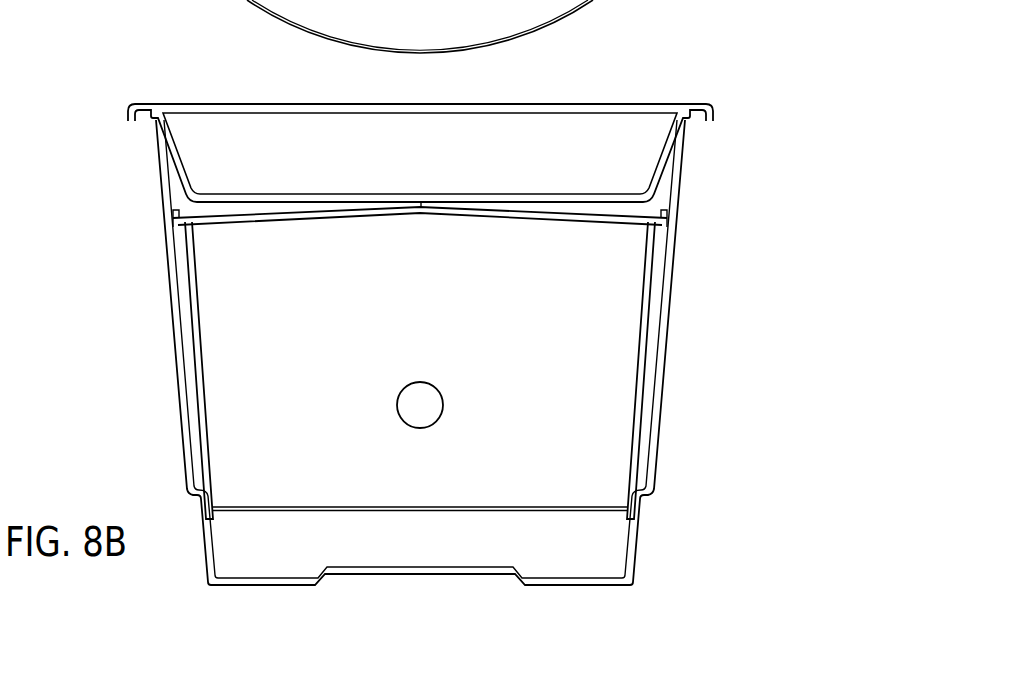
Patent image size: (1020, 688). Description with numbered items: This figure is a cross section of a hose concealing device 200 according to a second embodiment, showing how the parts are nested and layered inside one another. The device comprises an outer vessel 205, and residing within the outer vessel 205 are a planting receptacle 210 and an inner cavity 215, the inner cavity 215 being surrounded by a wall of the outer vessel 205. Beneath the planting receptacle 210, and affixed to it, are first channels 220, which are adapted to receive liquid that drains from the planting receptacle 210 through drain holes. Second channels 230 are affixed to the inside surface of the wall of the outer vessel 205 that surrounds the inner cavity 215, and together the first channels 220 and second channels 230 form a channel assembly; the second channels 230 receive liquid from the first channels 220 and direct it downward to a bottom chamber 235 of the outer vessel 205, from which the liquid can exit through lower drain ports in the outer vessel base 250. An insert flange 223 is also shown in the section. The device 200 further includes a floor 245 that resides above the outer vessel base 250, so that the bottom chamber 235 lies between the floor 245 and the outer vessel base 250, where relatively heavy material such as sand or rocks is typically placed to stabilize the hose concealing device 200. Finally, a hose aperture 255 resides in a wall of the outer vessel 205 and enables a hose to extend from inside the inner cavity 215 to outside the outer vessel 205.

The hose concealing device 200 is at (657, 64).
The outer vessel 205 is at (667, 332).
The planting receptacle 210 is at (668, 148).
The inner cavity 215 is at (628, 396).
The first channels 220 is at (617, 222).
The insert flange 223 is at (663, 212).
The second channels 230 is at (637, 433).
The bottom chamber 235 is at (625, 542).
The floor 245 is at (270, 510).
The outer vessel base 250 is at (593, 585).
The hose aperture 255 is at (397, 401).